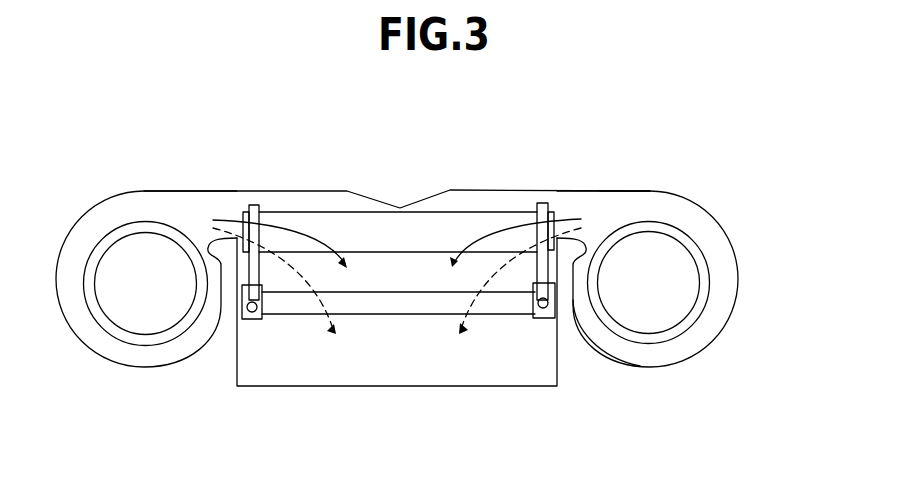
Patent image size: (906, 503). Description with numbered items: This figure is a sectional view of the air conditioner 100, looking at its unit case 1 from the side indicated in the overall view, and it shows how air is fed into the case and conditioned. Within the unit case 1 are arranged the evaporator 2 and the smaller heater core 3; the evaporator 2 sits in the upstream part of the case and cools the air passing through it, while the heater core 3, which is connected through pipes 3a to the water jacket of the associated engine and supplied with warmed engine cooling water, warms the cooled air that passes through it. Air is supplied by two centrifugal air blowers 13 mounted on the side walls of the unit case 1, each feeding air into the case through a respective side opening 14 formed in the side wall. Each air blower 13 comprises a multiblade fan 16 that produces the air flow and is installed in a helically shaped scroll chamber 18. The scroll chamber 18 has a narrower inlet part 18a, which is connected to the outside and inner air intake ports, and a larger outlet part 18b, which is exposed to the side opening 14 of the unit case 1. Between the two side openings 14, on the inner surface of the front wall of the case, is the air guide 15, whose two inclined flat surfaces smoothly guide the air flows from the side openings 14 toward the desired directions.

The air conditioner 100 is at (685, 80).
The unit case 1 is at (295, 387).
The evaporator 2 is at (363, 211).
The heater core 3 is at (392, 298).
The pipes 3a is at (268, 210).
The air blowers 13 is at (151, 191).
The side openings 14 is at (228, 200).
The air guide 15 is at (461, 191).
The multiblade fan 16 is at (708, 260).
The scroll chamber 18 is at (720, 234).
The narrower inlet part 18a is at (588, 255).
The larger outlet part 18b is at (633, 207).